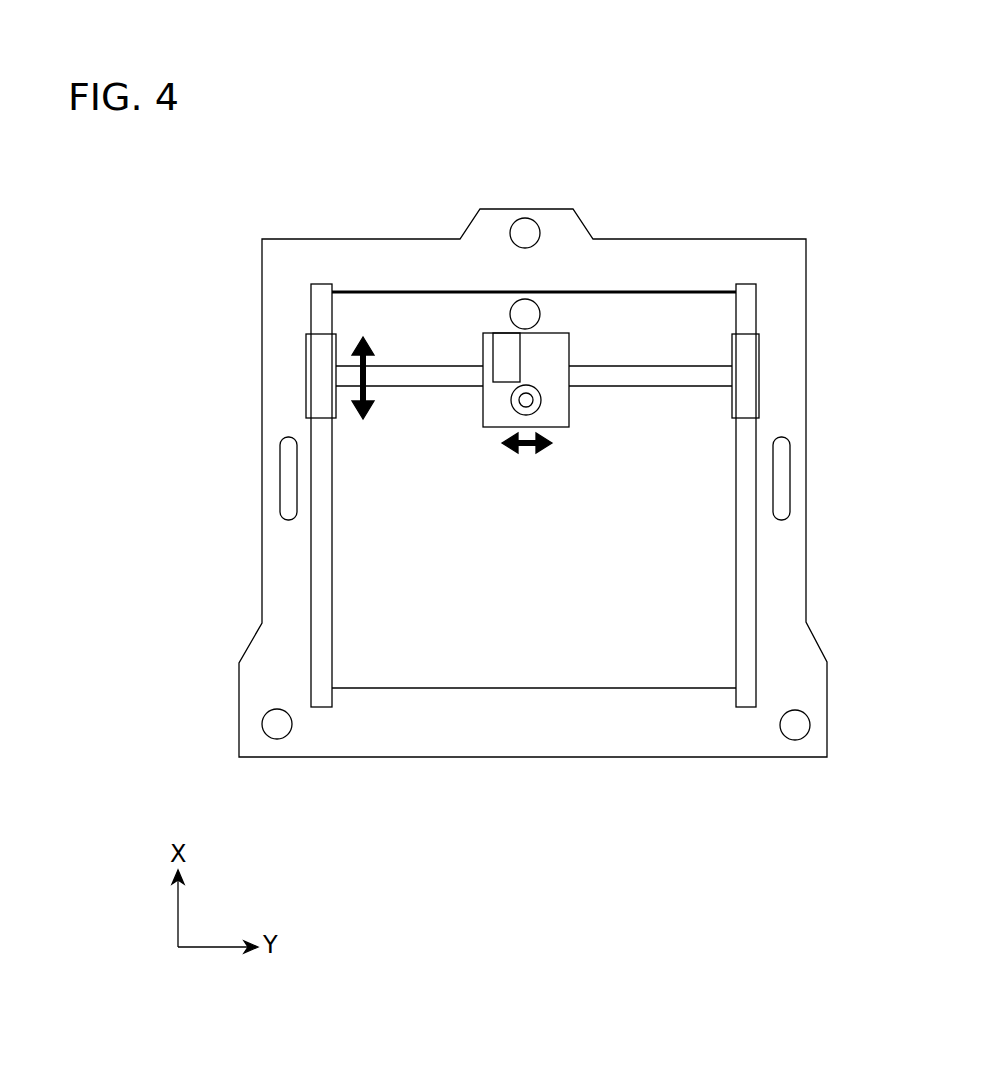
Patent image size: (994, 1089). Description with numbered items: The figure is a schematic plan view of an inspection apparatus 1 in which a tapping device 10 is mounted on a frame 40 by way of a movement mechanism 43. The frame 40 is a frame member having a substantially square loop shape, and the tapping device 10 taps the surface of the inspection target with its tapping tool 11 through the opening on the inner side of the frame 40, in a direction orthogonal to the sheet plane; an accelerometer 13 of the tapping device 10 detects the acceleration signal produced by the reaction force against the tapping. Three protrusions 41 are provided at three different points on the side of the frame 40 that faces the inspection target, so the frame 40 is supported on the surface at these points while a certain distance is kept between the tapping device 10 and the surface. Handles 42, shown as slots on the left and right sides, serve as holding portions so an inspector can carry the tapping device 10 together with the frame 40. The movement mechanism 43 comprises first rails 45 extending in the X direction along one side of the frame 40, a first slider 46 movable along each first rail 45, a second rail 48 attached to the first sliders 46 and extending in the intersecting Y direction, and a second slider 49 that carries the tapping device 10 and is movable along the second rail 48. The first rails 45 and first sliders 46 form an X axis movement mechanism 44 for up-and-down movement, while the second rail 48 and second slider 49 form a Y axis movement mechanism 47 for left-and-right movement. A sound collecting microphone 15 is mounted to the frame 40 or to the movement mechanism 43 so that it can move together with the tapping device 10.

The inspection apparatus 1 is at (618, 97).
The tapping device 10 is at (557, 473).
The tapping tool 11 is at (591, 432).
The accelerometer 13 is at (538, 408).
The sound collecting microphone 15 is at (527, 312).
The frame 40 is at (280, 593).
The protrusion 41 is at (525, 232).
The handle 42 is at (280, 482).
The movement mechanism 43 is at (483, 533).
The X axis movement mechanism 44 is at (418, 494).
The first rail 45 is at (747, 322).
The first slider 46 is at (752, 372).
The Y axis movement mechanism 47 is at (510, 494).
The second rail 48 is at (467, 382).
The second slider 49 is at (494, 423).